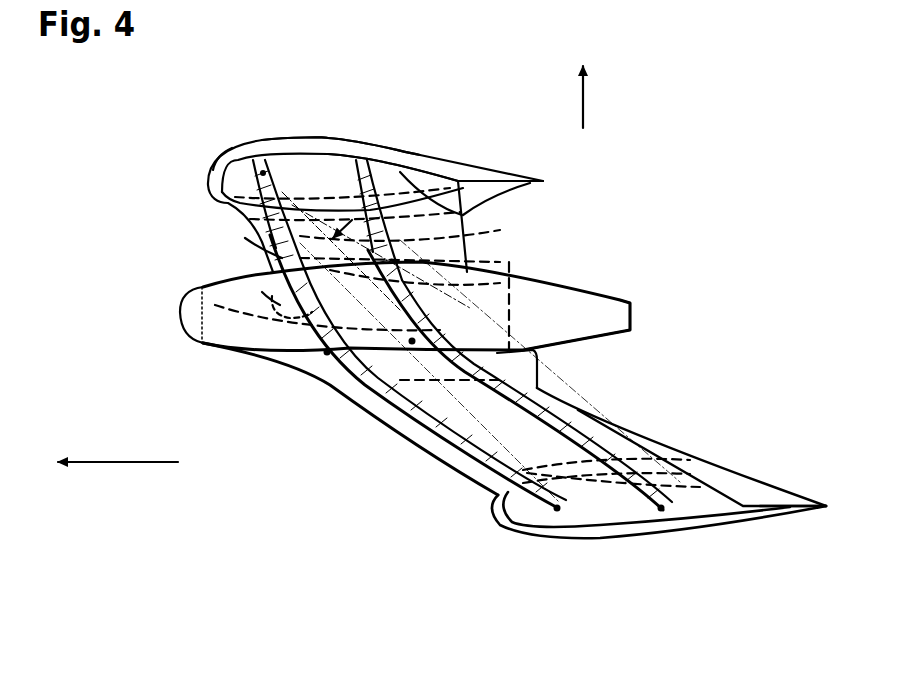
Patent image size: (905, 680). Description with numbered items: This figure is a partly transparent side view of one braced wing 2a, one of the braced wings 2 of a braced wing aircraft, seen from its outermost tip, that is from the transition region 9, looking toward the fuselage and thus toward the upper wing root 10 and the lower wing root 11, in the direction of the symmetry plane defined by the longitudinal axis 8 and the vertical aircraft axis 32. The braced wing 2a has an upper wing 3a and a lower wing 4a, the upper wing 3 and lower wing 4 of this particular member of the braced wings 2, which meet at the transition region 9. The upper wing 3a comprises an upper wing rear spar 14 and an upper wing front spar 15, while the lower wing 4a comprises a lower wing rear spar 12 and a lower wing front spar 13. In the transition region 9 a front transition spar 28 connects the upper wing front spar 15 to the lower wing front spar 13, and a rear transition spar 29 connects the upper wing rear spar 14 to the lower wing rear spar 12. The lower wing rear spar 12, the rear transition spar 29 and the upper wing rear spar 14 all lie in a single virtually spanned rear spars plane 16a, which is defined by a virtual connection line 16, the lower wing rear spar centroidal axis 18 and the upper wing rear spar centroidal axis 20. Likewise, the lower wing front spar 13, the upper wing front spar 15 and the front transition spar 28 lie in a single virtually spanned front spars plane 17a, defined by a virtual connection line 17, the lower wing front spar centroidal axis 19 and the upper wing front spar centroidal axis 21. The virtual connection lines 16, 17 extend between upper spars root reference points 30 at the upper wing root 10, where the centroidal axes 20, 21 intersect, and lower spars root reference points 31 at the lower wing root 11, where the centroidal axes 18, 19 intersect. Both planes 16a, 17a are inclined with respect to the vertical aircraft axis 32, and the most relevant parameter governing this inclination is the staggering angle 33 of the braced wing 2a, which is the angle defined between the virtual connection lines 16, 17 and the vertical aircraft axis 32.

The braced wings 2 is at (338, 110).
The braced wing 2a is at (674, 448).
The upper guide element 3 is at (220, 219).
The upper wing 3a is at (213, 205).
The lower guide element 4 is at (403, 448).
The lower wing 4a is at (572, 393).
The longitudinal axis 8 is at (110, 462).
The transition region 9 is at (269, 325).
The upper wing root 10 is at (437, 148).
The lower wing root 11 is at (748, 481).
The lower wing rear spar 12 is at (627, 500).
The lower wing front spar 13 is at (471, 468).
The upper wing rear spar 14 is at (398, 221).
The upper wing front spar 15 is at (272, 252).
The virtual connection line 16 is at (560, 378).
The single virtually spanned rear spars plane 16a is at (421, 235).
The virtual connection line 17 is at (457, 414).
The single virtually spanned front spars plane 17a is at (347, 275).
The lower wing rear spar centroidal axis 18 is at (588, 445).
The lower wing front spar centroidal axis 19 is at (341, 376).
The upper wing rear spar centroidal axis 20 is at (400, 252).
The upper wing front spar centroidal axis 21 is at (288, 194).
The front transition spar 28 is at (261, 292).
The rear transition spar 29 is at (359, 292).
The upper spars root reference points 30 is at (265, 155).
The lower spars root reference points 31 is at (556, 514).
The vertical aircraft axis 32 is at (583, 104).
The staggering angle 33 is at (503, 258).